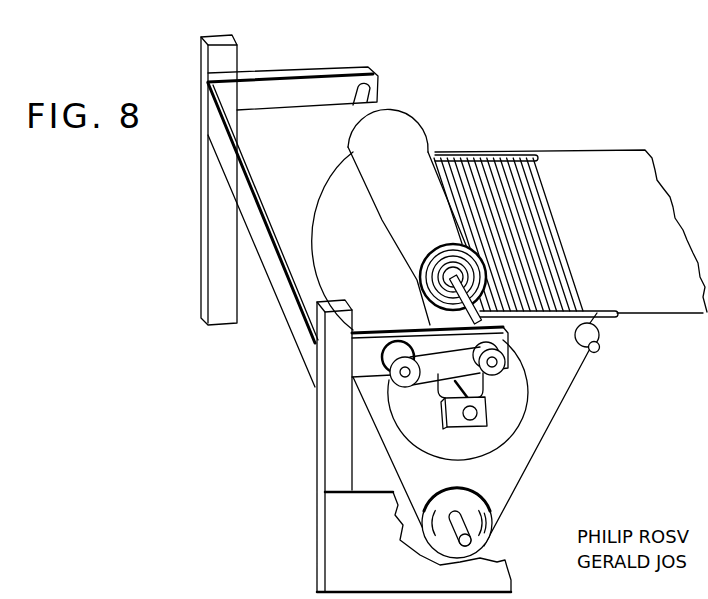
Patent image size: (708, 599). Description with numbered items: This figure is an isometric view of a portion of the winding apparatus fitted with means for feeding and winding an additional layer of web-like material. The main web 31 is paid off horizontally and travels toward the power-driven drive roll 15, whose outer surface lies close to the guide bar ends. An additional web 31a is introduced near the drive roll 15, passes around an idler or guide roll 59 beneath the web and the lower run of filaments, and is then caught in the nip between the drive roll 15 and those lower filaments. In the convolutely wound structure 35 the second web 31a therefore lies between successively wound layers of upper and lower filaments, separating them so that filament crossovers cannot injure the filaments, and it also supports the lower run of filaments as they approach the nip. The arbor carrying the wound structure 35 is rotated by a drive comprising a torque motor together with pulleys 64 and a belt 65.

The drive roll 15 is at (471, 452).
The web 31 is at (633, 223).
The additional web 31a is at (415, 165).
The convolutely wound structure 35 is at (433, 143).
The idler or guide roll 59 is at (592, 312).
The pulleys 64 is at (500, 374).
The belt 65 is at (433, 325).